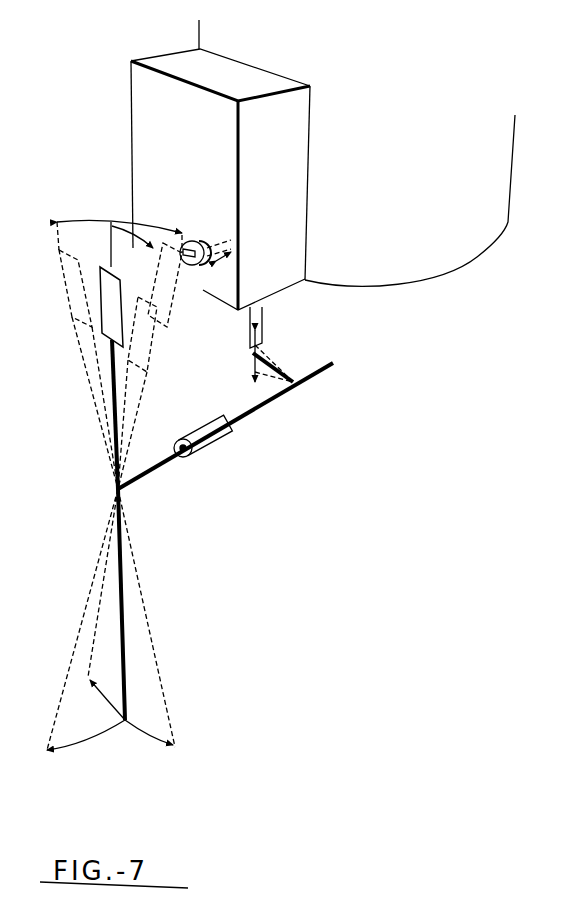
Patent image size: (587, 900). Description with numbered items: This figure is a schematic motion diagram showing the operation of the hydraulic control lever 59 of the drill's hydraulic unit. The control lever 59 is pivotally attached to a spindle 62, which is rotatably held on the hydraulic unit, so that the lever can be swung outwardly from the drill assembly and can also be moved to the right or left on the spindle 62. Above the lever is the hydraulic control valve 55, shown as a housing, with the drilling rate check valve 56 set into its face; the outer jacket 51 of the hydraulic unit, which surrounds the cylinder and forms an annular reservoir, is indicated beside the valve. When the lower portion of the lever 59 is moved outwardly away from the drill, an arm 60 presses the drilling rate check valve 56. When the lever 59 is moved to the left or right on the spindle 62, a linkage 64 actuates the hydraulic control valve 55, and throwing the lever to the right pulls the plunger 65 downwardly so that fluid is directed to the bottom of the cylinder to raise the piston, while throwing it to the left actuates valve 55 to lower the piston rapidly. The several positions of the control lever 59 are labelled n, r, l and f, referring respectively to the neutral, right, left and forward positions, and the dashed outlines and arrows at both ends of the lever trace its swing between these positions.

The hydraulic control valve 55 is at (131, 125).
The drilling rate check valve 56 is at (218, 227).
The outer jacket 51 is at (428, 283).
The plunger 65 is at (263, 320).
The linkage 64 is at (280, 367).
The spindle 62 is at (267, 407).
The arm 60 is at (102, 333).
The control lever 59 is at (128, 727).
The neutral position n is at (114, 266).
The right position r is at (66, 278).
The forward position f is at (164, 306).
The left position l is at (150, 343).